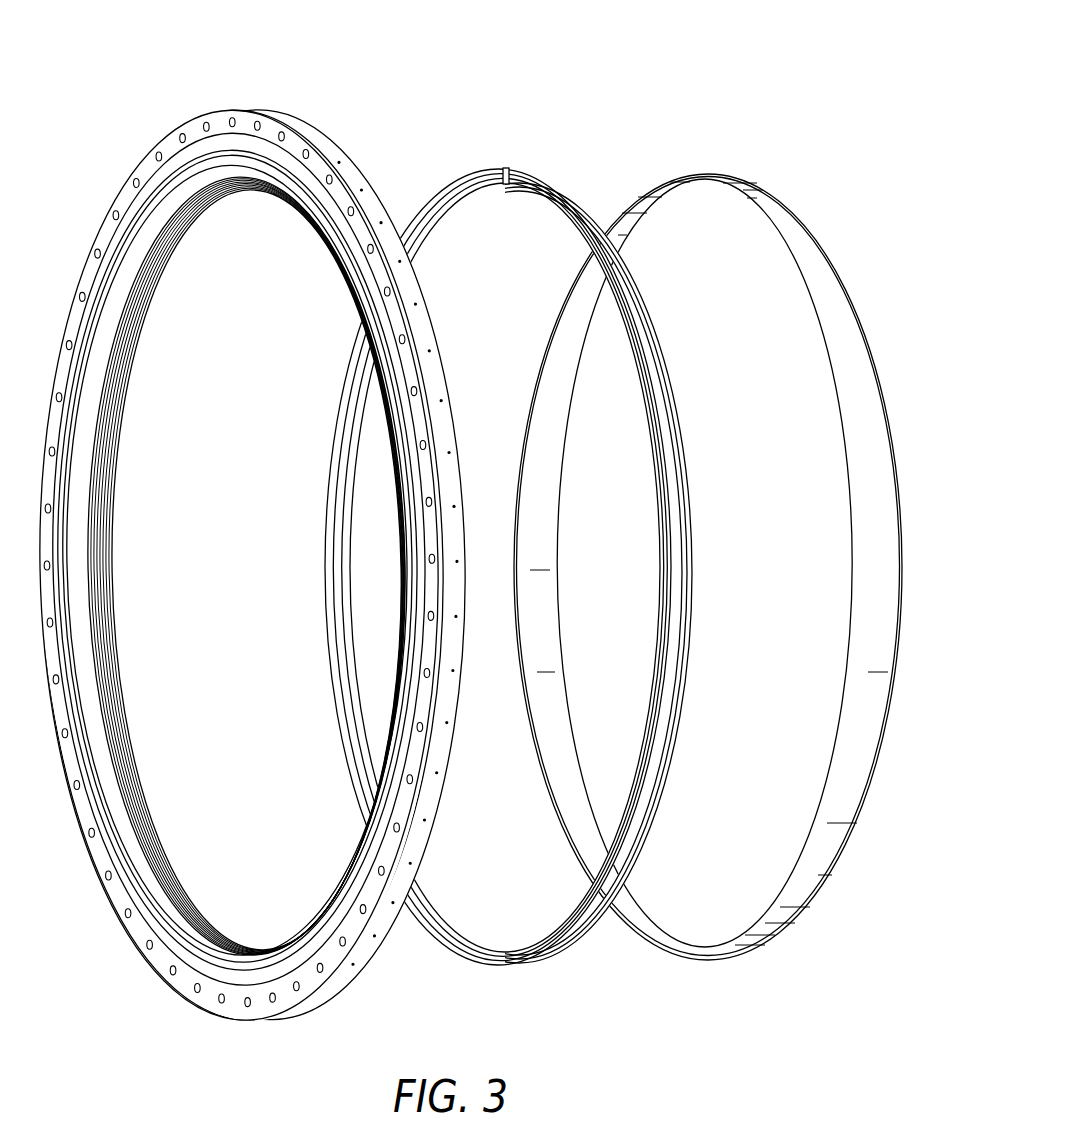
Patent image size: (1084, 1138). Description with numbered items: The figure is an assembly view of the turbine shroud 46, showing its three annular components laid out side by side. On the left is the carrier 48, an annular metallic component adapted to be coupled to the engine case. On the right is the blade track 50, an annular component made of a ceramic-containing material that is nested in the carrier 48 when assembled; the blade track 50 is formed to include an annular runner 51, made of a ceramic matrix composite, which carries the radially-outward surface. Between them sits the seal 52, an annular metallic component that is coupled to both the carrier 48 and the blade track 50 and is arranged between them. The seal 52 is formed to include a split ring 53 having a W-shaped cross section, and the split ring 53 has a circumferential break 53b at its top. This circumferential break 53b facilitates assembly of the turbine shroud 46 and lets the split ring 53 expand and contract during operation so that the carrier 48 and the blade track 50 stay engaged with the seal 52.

The turbine shroud 46 is at (467, 514).
The carrier 48 is at (261, 110).
The blade track 50 is at (708, 547).
The annular runner 51 is at (774, 218).
The seal 52 is at (508, 549).
The split ring 53 is at (545, 200).
The circumferential break 53b is at (497, 188).